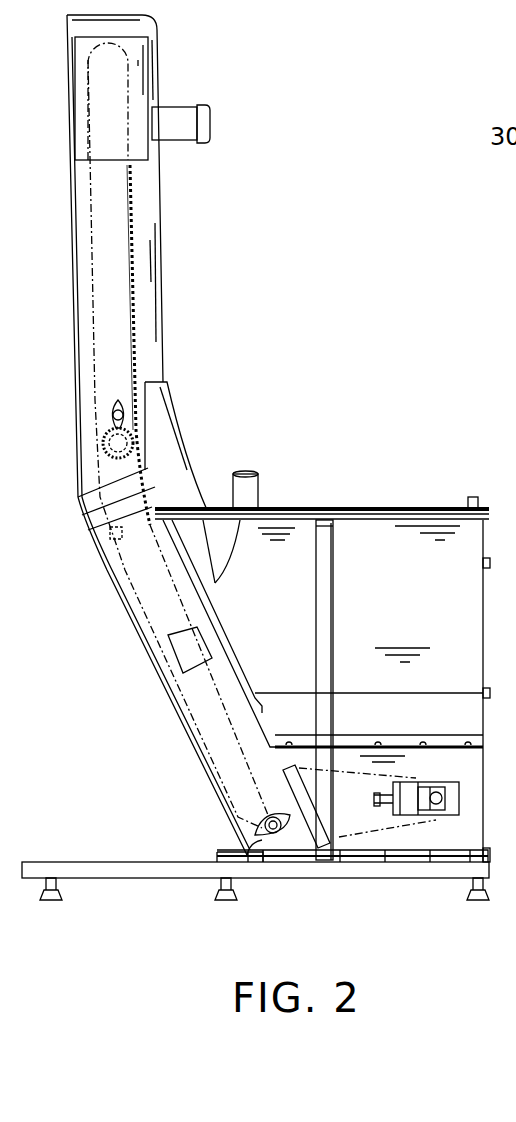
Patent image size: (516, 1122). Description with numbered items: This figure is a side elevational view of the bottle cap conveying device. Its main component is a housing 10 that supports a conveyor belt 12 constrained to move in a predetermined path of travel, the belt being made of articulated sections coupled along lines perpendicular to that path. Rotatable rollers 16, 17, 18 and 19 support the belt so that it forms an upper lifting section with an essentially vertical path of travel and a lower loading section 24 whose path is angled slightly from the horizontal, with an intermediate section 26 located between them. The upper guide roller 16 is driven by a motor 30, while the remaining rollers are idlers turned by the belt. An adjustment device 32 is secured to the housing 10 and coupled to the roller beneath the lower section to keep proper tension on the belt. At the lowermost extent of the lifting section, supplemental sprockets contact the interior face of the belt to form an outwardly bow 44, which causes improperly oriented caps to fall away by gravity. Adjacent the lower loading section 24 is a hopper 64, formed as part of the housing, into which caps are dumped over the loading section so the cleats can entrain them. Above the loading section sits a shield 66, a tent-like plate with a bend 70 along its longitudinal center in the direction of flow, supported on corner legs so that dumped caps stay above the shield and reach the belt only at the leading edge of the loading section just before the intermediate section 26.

The housing 10 is at (132, 623).
The conveyor belt 12 is at (180, 683).
The upper guide roller 16 is at (88, 65).
The rotatable roller 17 is at (117, 540).
The rotatable roller 18 is at (281, 843).
The rotatable roller 19 is at (448, 815).
The lower loading section 24 is at (419, 780).
The intermediate section 26 is at (190, 597).
The motor 30 is at (182, 113).
The adjustment device 32 is at (392, 800).
The outwardly bow 44 is at (137, 442).
The hopper 64 is at (399, 510).
The shield 66 is at (471, 721).
The bend 70 is at (459, 690).